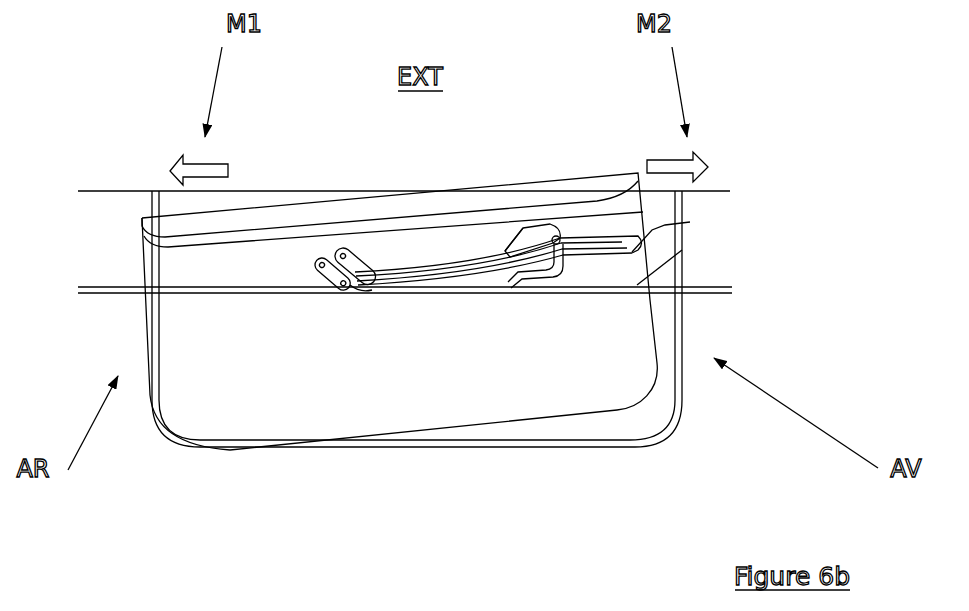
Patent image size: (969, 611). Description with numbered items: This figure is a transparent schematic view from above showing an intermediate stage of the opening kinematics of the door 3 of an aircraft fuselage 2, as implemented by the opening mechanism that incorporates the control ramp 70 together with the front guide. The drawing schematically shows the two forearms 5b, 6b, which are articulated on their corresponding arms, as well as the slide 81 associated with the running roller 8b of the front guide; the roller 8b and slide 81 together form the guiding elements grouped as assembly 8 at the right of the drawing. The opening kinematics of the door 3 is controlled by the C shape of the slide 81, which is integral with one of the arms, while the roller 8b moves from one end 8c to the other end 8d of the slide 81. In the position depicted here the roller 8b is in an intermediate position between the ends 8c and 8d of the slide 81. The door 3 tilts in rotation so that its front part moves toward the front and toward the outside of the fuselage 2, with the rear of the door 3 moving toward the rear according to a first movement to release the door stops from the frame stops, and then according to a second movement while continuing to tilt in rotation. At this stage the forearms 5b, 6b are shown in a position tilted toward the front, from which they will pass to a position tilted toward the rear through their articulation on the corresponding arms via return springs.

The fuselage 2 is at (382, 526).
The door 3 is at (367, 415).
The forearm 5b is at (326, 258).
The forearm 6b is at (343, 248).
The control ramp 70 is at (508, 257).
The opening control assembly 8 is at (873, 210).
The running roller 8b is at (560, 236).
The end of the slide 8c is at (527, 224).
The end of the slide 8d is at (510, 275).
The slide 81 is at (557, 258).